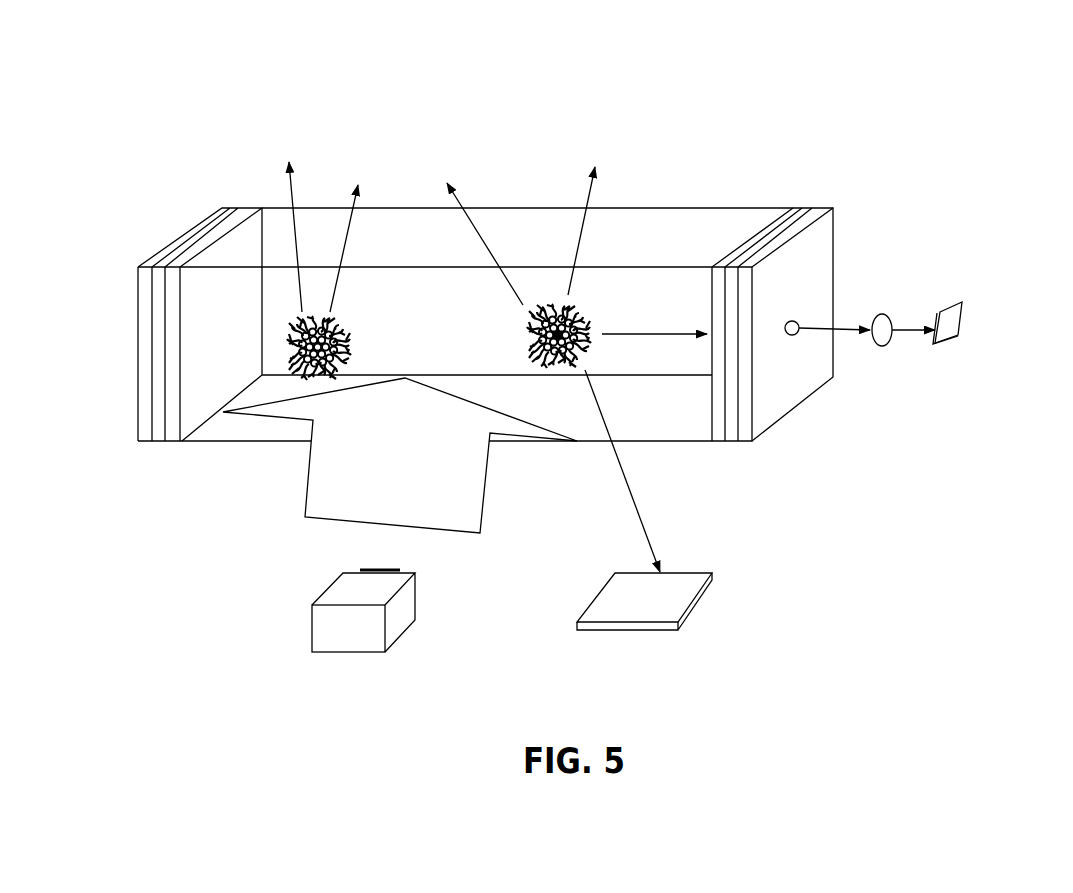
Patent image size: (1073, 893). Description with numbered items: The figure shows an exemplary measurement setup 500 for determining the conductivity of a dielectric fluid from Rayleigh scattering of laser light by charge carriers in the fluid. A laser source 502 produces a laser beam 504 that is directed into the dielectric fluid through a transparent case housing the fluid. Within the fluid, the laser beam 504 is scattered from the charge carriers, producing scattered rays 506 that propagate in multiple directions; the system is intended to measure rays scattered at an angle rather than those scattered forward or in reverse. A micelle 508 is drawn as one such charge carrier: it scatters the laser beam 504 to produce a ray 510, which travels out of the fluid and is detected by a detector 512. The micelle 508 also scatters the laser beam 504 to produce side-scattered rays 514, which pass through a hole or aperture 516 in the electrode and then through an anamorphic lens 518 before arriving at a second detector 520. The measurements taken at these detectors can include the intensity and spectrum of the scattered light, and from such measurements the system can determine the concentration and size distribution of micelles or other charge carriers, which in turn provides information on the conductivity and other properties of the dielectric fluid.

The measurement setup 500 is at (505, 41).
The laser source 502 is at (327, 621).
The laser beam 504 is at (400, 455).
The scattered rays 506 is at (288, 150).
The micelle 508 is at (588, 302).
The ray 510 is at (635, 517).
The detector 512 is at (687, 587).
The side-scattered rays 514 is at (643, 337).
The aperture 516 is at (799, 322).
The anamorphic lens 518 is at (885, 342).
The detector 520 is at (950, 330).